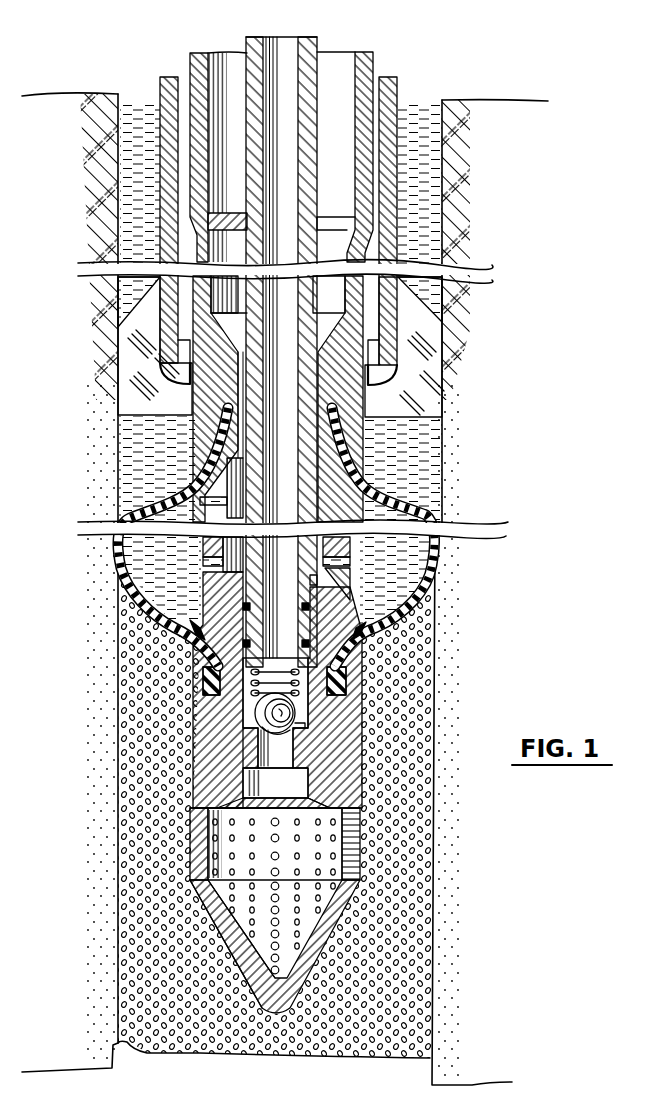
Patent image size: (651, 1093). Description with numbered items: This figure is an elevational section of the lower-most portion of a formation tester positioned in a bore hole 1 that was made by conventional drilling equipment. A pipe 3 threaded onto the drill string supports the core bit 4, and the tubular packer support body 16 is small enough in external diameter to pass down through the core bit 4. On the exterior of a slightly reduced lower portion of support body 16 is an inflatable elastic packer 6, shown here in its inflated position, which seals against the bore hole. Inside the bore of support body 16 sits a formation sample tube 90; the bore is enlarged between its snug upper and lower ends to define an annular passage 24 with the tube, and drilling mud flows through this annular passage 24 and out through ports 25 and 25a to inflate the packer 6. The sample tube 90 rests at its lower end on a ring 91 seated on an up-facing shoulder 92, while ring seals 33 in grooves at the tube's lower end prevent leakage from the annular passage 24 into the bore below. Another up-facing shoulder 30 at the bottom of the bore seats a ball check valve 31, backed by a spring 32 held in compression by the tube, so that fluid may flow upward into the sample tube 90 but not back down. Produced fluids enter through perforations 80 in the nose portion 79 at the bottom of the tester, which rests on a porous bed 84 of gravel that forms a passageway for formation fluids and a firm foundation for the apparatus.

The bore hole 1 is at (122, 110).
The pipe 3 is at (390, 96).
The core bit 4 is at (140, 348).
The inflatable elastic packer 6 is at (217, 500).
The packer support body 16 is at (365, 75).
The annular passage 24 is at (327, 183).
The port 25 is at (278, 537).
The port 25a is at (247, 608).
The up-facing shoulder 30 is at (297, 718).
The ball check valve 31 is at (273, 728).
The spring 32 is at (298, 683).
The ring seals 33 is at (240, 645).
The nose portion 79 is at (303, 990).
The perforations 80 is at (307, 848).
The porous bed 84 is at (383, 793).
The formation sample tube 90 is at (262, 55).
The ring 91 is at (240, 578).
The up-facing shoulder 92 is at (310, 590).